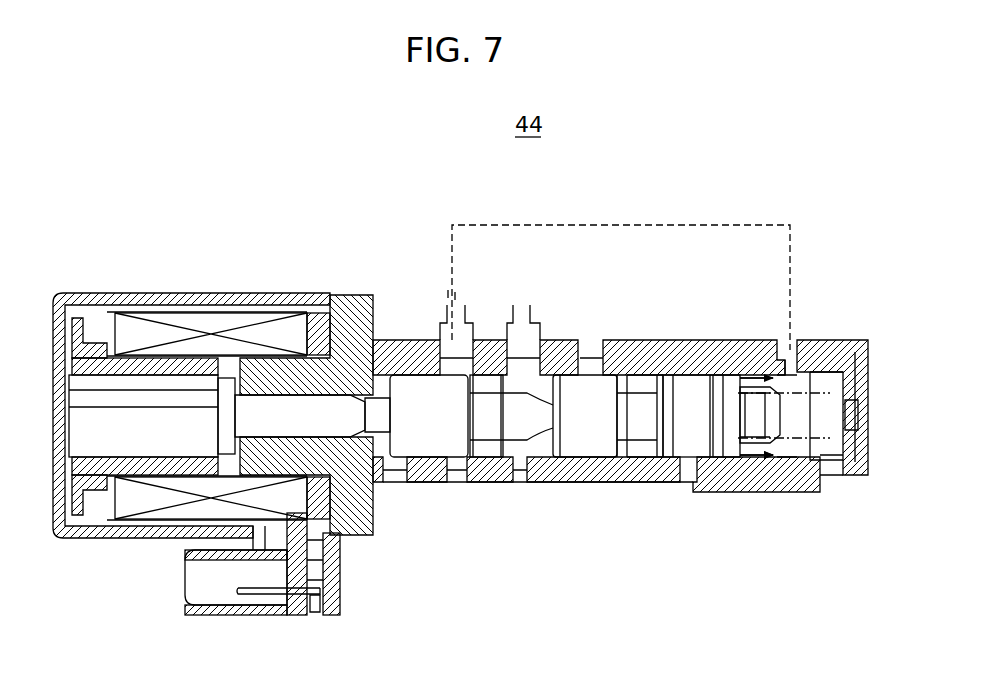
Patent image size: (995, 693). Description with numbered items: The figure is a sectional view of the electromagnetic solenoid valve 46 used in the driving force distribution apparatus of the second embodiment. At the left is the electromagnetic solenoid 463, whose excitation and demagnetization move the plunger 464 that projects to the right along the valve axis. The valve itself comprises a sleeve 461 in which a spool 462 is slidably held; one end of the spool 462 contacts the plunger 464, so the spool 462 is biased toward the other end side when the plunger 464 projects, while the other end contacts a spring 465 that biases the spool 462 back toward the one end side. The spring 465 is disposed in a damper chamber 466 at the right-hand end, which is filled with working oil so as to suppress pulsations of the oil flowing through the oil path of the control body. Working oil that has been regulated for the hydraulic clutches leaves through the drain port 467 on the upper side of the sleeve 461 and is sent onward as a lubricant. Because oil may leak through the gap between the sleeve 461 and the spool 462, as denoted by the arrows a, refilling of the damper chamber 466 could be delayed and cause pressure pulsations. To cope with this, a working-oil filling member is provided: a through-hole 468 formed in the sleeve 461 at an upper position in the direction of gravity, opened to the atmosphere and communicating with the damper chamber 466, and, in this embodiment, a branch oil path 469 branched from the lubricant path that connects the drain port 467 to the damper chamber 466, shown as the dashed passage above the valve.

The electromagnetic solenoid valve 46 is at (593, 338).
The sleeve 461 is at (730, 372).
The spool 462 is at (598, 450).
The electromagnetic solenoid 463 is at (215, 290).
The plunger 464 is at (272, 412).
The spring 465 is at (788, 442).
The damper chamber 466 is at (820, 342).
The drain port 467 is at (452, 312).
The through-hole 468 is at (795, 350).
The branch oil path 469 is at (748, 222).
The arrows a is at (722, 372).